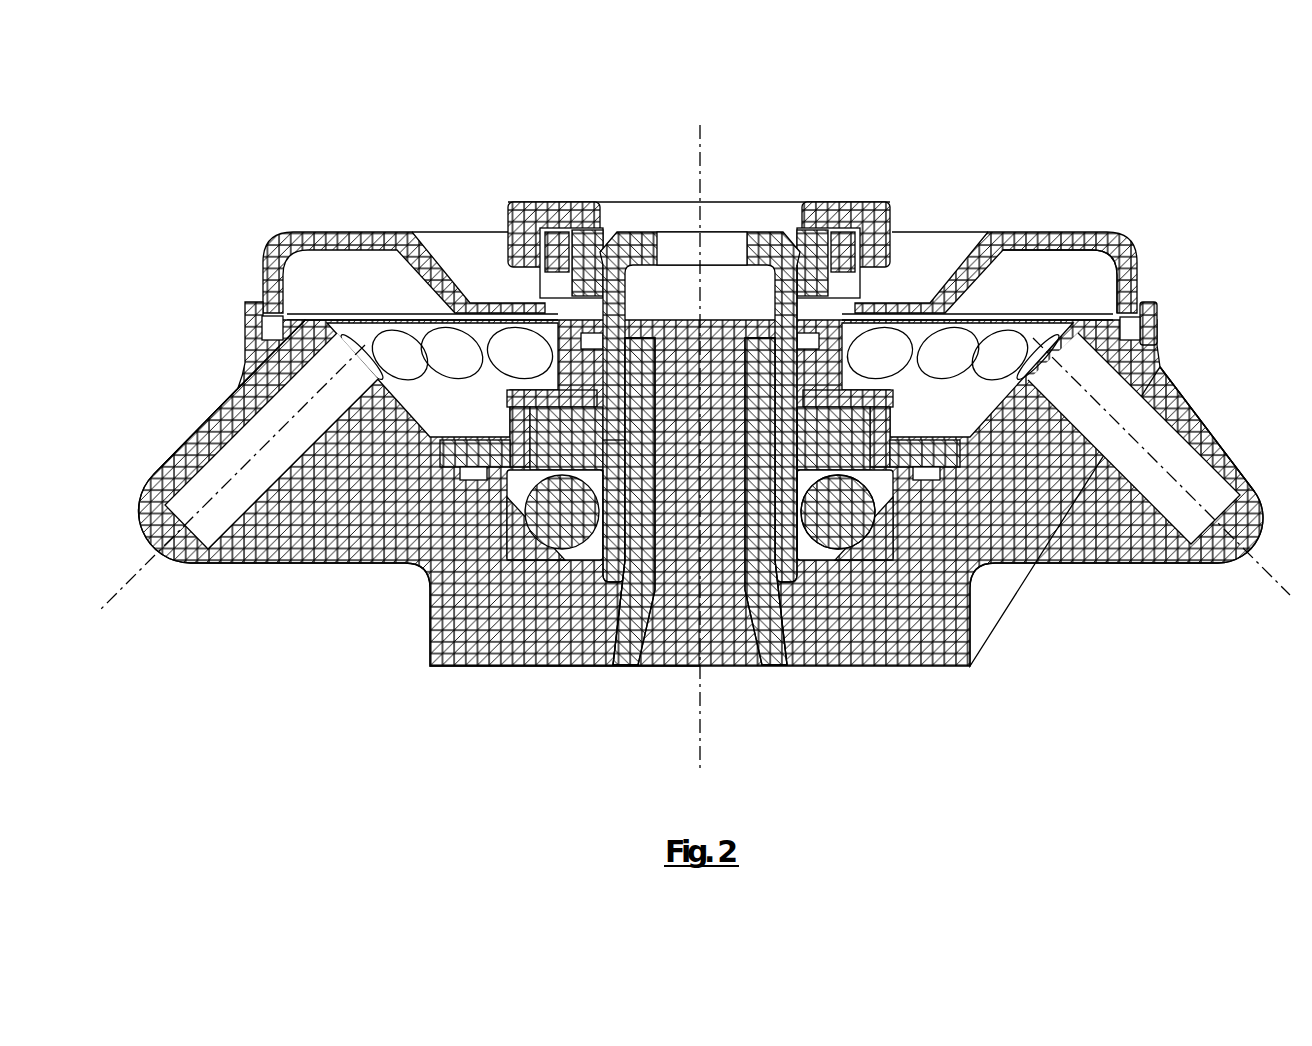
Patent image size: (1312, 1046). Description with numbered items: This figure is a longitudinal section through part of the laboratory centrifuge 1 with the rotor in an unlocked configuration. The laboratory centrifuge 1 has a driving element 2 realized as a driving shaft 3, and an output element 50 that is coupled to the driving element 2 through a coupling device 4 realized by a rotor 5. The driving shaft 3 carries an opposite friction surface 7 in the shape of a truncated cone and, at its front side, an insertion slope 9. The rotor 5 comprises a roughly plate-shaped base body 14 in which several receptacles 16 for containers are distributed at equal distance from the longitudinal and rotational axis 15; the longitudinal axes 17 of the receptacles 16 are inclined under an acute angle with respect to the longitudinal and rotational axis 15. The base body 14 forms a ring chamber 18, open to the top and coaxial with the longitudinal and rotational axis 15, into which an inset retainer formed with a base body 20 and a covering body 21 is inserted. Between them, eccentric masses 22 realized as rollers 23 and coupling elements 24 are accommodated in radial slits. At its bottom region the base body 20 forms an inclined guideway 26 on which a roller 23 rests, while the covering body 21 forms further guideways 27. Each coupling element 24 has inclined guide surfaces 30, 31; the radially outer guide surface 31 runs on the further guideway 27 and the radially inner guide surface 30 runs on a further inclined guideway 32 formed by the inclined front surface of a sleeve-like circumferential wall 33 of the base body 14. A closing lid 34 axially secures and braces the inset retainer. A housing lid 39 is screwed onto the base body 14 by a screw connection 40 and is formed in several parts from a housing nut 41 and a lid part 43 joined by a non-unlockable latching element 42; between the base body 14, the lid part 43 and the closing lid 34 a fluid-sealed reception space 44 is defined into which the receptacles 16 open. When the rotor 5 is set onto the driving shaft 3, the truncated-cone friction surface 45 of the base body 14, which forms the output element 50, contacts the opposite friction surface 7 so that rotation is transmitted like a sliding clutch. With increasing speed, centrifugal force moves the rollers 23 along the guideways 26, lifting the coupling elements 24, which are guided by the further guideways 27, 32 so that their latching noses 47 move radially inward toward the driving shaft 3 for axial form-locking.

The laboratory centrifuge 1 is at (1014, 134).
The driving element 2 is at (637, 628).
The driving shaft 3 is at (639, 631).
The coupling device 4 is at (483, 514).
The rotor 5 is at (272, 549).
The opposite friction surface 7 is at (789, 458).
The insertion slope 9 is at (762, 343).
The base body 14 is at (1100, 537).
The longitudinal and rotational axis 15 is at (703, 707).
The receptacles 16 is at (217, 437).
The longitudinal axes of the receptacles 17 is at (258, 445).
The ring chamber 18 is at (587, 552).
The base body of the inset retainer 20 is at (525, 562).
The covering body 21 is at (538, 432).
The eccentric masses 22 is at (838, 522).
The rollers 23 is at (839, 530).
The coupling elements 24 is at (880, 407).
The guideway 26 is at (557, 556).
The further guideways 27 is at (868, 462).
The guide surface 30 is at (813, 448).
The guide surface 31 is at (832, 518).
The further inclined guideway 32 is at (793, 454).
The sleeve-like circumferential wall 33 is at (622, 525).
The closing lid 34 is at (613, 343).
The housing lid 39 is at (1046, 231).
The screw connection 40 is at (604, 240).
The housing nut 41 is at (844, 208).
The non-unlockable latching element 42 is at (818, 268).
The lid part 43 is at (1082, 248).
The reception space 44 is at (966, 408).
The friction surface 45 is at (783, 640).
The latching nose 47 is at (622, 443).
The output element 50 is at (607, 620).